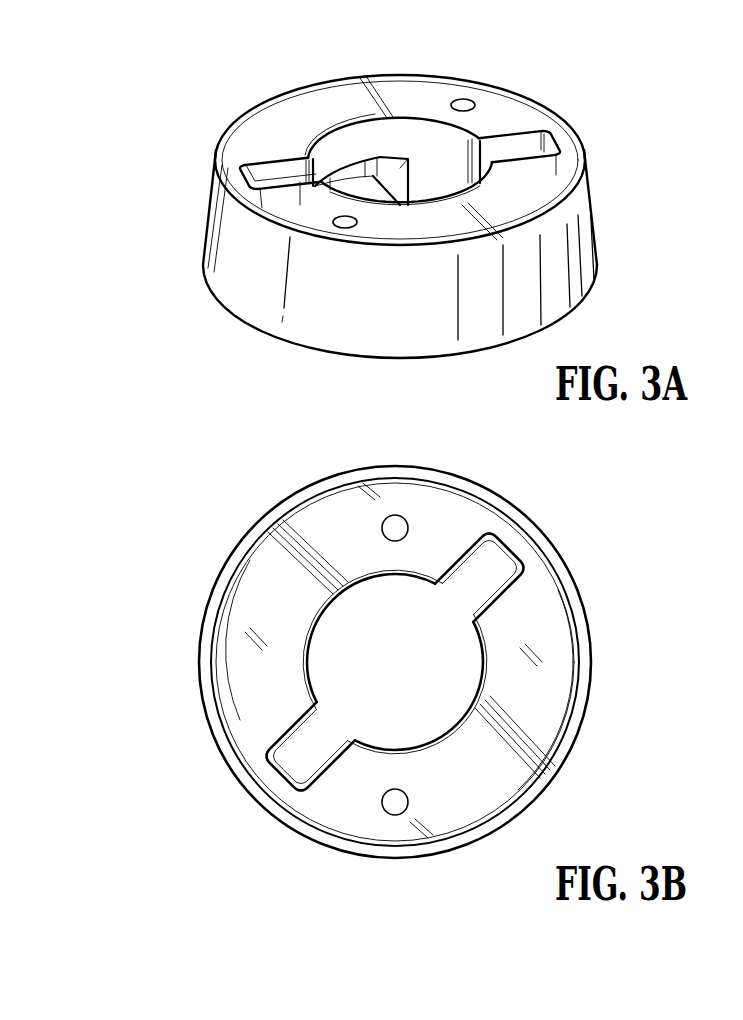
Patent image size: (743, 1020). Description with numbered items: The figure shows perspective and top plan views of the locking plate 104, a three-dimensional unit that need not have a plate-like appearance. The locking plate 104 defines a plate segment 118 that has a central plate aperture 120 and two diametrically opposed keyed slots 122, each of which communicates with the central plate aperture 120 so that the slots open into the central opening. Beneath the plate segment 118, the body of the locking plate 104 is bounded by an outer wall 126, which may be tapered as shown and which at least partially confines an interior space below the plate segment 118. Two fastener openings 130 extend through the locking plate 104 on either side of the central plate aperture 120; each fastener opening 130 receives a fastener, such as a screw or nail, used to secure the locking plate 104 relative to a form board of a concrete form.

In FIG. 3A, the locking plate 104 is at (425, 190).
In FIG. 3B, the locking plate 104 is at (385, 647).
In FIG. 3A, the plate segment 118 is at (400, 134).
In FIG. 3B, the plate segment 118 is at (421, 662).
In FIG. 3A, the central plate aperture 120 is at (430, 121).
In FIG. 3B, the central plate aperture 120 is at (318, 639).
In FIG. 3A, the keyed slot 122 is at (417, 144).
In FIG. 3B, the keyed slot 122 is at (347, 613).
In FIG. 3A, the outer wall 126 is at (458, 254).
In FIG. 3B, the outer wall 126 is at (432, 662).
In FIG. 3A, the fastener opening 130 is at (306, 163).
In FIG. 3B, the fastener opening 130 is at (352, 632).